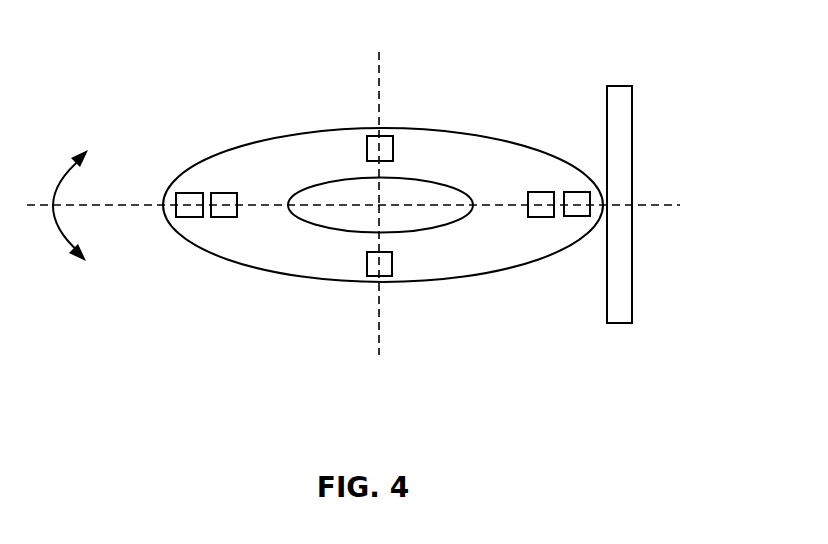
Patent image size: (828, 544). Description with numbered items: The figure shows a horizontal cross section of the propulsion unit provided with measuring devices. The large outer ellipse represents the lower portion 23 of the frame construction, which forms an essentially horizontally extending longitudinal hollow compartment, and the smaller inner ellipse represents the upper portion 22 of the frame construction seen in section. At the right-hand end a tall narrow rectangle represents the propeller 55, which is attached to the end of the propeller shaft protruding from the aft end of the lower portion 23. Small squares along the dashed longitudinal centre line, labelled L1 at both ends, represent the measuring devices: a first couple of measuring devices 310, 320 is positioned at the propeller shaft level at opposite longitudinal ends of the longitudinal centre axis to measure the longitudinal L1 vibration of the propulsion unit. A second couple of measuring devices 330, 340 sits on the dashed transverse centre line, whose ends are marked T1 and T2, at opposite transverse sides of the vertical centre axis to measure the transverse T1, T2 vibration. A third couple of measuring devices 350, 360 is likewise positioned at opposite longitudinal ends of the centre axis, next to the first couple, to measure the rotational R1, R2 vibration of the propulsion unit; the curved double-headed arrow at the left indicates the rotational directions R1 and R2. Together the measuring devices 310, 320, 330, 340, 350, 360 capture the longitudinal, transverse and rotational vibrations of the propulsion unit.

The upper portion 22 is at (318, 195).
The lower portion 23 is at (481, 129).
The propeller 55 is at (616, 95).
The measuring device 310 is at (575, 200).
The measuring device 320 is at (191, 200).
The measuring device 330 is at (375, 138).
The measuring device 340 is at (374, 272).
The measuring device 350 is at (541, 210).
The measuring device 360 is at (225, 210).
The longitudinal vibration direction L1 is at (353, 190).
The transverse vibration direction T1 is at (379, 109).
The transverse vibration direction T2 is at (378, 297).
The rotational vibration direction R1 is at (78, 192).
The rotational vibration direction R2 is at (89, 283).